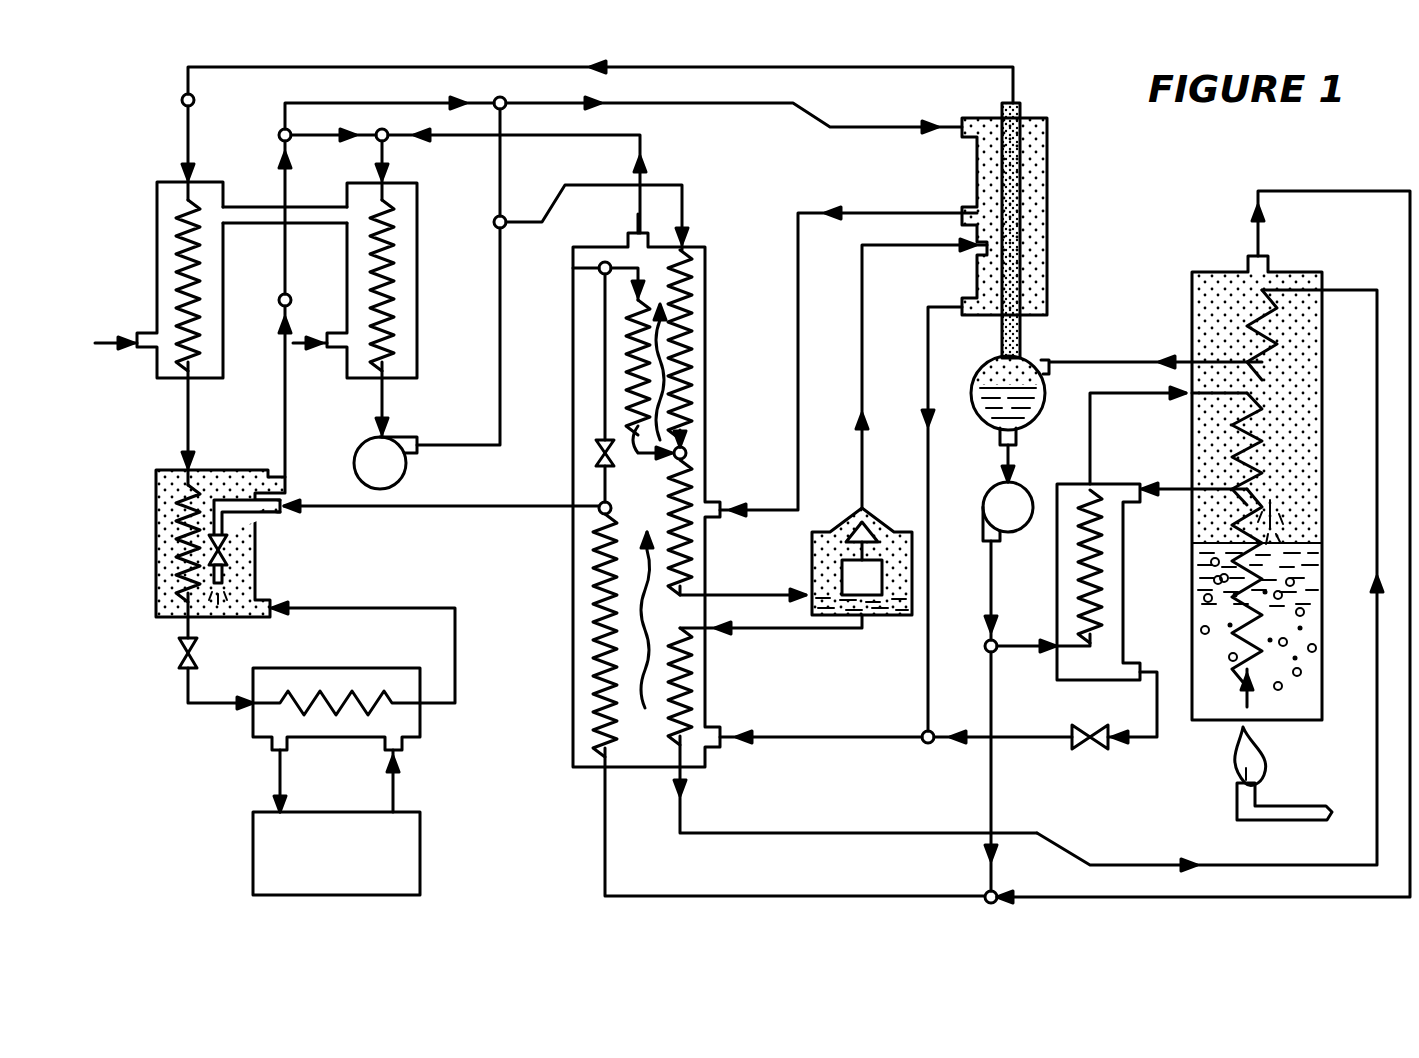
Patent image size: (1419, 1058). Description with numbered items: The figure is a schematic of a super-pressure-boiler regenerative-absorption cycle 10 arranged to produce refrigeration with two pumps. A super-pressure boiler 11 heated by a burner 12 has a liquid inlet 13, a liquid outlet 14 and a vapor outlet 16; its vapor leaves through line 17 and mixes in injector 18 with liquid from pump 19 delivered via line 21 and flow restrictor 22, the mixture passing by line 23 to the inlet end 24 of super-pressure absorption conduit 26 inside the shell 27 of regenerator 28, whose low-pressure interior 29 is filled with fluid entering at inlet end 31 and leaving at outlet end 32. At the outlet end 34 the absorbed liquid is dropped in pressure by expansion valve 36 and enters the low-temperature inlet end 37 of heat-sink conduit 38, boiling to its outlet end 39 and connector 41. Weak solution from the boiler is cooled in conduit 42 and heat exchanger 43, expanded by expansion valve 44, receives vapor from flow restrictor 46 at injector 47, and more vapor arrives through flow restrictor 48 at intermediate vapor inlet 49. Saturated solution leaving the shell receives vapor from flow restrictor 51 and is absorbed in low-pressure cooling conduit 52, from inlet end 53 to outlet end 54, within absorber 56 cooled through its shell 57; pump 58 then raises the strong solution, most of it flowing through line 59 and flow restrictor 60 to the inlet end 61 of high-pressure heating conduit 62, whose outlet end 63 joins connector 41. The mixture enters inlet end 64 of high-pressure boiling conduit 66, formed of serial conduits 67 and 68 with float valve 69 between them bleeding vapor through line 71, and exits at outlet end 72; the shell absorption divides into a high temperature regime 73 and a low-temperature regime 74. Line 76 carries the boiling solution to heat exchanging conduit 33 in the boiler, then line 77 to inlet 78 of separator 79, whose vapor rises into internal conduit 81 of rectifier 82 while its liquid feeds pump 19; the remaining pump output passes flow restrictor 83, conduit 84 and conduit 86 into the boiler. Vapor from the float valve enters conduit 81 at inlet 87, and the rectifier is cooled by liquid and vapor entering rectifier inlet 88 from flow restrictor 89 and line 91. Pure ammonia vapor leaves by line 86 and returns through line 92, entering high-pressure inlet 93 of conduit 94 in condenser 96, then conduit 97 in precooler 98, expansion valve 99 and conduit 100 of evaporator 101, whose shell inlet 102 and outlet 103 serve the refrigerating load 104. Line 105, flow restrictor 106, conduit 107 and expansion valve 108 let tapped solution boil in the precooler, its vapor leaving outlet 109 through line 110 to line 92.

The super-pressure-boiler regenerative-absorption cycle 10 is at (1196, 186).
The super-pressure boiler 11 is at (1214, 260).
The burner 12 is at (1230, 805).
The liquid inlet 13 is at (1278, 503).
The liquid outlet 14 is at (1255, 676).
The vapor outlet 16 is at (1263, 262).
The line 17 is at (1078, 893).
The injector 18 is at (985, 893).
The pump 19 is at (984, 481).
The line 21 is at (990, 583).
The flow restrictor 22 is at (975, 678).
The line 23 is at (603, 862).
The inlet end 24 is at (598, 765).
The super-pressure absorption conduit 26 is at (586, 724).
The shell 27 is at (573, 712).
The regenerator 28 is at (570, 652).
The interior 29 is at (584, 589).
The inlet end 31 is at (725, 742).
The outlet end 32 is at (615, 222).
The heat exchanging conduit 33 is at (1250, 318).
The outlet end 34 is at (625, 516).
The expansion valve 36 is at (595, 448).
The low-temperature inlet end 37 is at (571, 270).
The heat-sink conduit 38 is at (614, 315).
The outlet end 39 is at (650, 466).
The connector 41 is at (688, 452).
The conduit 42 is at (1252, 628).
The heat exchanger 43 is at (1130, 594).
The expansion valve 44 is at (1086, 746).
The flow restrictor 46 is at (944, 372).
The injector 47 is at (924, 743).
The flow restrictor 48 is at (932, 230).
The intermediate vapor inlet 49 is at (725, 512).
The flow restrictor 51 is at (352, 138).
The low-pressure cooling conduit 52 is at (400, 255).
The inlet end 53 is at (388, 142).
The outlet end 54 is at (386, 400).
The absorber 56 is at (428, 326).
The shell 57 is at (422, 347).
The pump 58 is at (410, 472).
The line 59 is at (502, 297).
The flow restrictor 60 is at (622, 202).
The inlet end 61 is at (684, 242).
The high-pressure heating conduit 62 is at (694, 351).
The outlet end 63 is at (688, 438).
The inlet end 64 is at (690, 463).
The high-pressure boiling conduit 66 is at (712, 578).
The conduit 67 is at (706, 556).
The conduit 68 is at (690, 662).
The float valve 69 is at (896, 622).
The line 71 is at (860, 327).
The outlet end 72 is at (687, 780).
The high temperature regime 73 is at (573, 637).
The low-temperature regime 74 is at (580, 345).
The line 76 is at (1133, 862).
The line 77 is at (1118, 362).
The inlet 78 is at (1026, 356).
The separator 79 is at (1056, 410).
The internal conduit 81 is at (1036, 203).
The rectifier 82 is at (1058, 272).
The flow restrictor 83 is at (1047, 664).
The conduit 84 is at (1080, 550).
The line 86 is at (278, 72).
The inlet 87 is at (985, 262).
The rectifier inlet 88 is at (966, 140).
The flow restrictor 89 is at (622, 178).
The line 91 is at (425, 103).
The line 92 is at (288, 255).
The high-pressure inlet 93 is at (186, 178).
The conduit 94 is at (178, 247).
The condenser 96 is at (152, 308).
The conduit 97 is at (172, 500).
The precooler 98 is at (150, 596).
The expansion valve 99 is at (178, 656).
The conduit 100 is at (332, 688).
The evaporator 101 is at (243, 733).
The inlet 102 is at (408, 745).
The outlet 103 is at (288, 745).
The refrigerating load 104 is at (246, 850).
The line 105 is at (560, 513).
The flow restrictor 106 is at (550, 490).
The conduit 107 is at (230, 522).
The expansion valve 108 is at (232, 562).
The outlet 109 is at (265, 468).
The line 110 is at (287, 430).